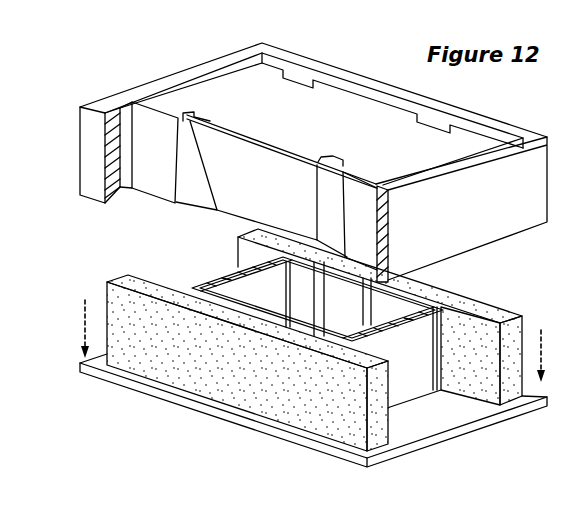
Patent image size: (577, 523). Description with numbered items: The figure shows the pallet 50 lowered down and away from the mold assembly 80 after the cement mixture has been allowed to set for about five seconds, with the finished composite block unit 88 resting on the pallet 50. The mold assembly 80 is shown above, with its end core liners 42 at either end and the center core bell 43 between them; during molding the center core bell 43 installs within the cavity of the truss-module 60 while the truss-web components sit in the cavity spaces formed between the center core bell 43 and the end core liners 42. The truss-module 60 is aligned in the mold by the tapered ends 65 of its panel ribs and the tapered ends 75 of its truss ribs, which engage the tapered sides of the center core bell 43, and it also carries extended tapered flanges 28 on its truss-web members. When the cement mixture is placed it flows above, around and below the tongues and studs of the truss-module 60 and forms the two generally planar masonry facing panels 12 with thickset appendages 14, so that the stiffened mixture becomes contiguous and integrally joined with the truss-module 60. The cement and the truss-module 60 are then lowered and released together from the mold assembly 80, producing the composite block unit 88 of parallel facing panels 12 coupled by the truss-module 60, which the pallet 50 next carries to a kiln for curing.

The masonry facing panel 12 is at (146, 283).
The thickset appendage 14 is at (192, 289).
The extended tapered flange 28 is at (438, 357).
The end core liner 42 is at (165, 127).
The center core bell 43 is at (270, 160).
The pallet 50 is at (423, 430).
The truss-module 60 is at (412, 390).
The tapered end of panel rib 65 is at (360, 311).
The tapered end of truss rib 75 is at (286, 313).
The mold assembly 80 is at (487, 106).
The composite block unit 88 is at (480, 285).